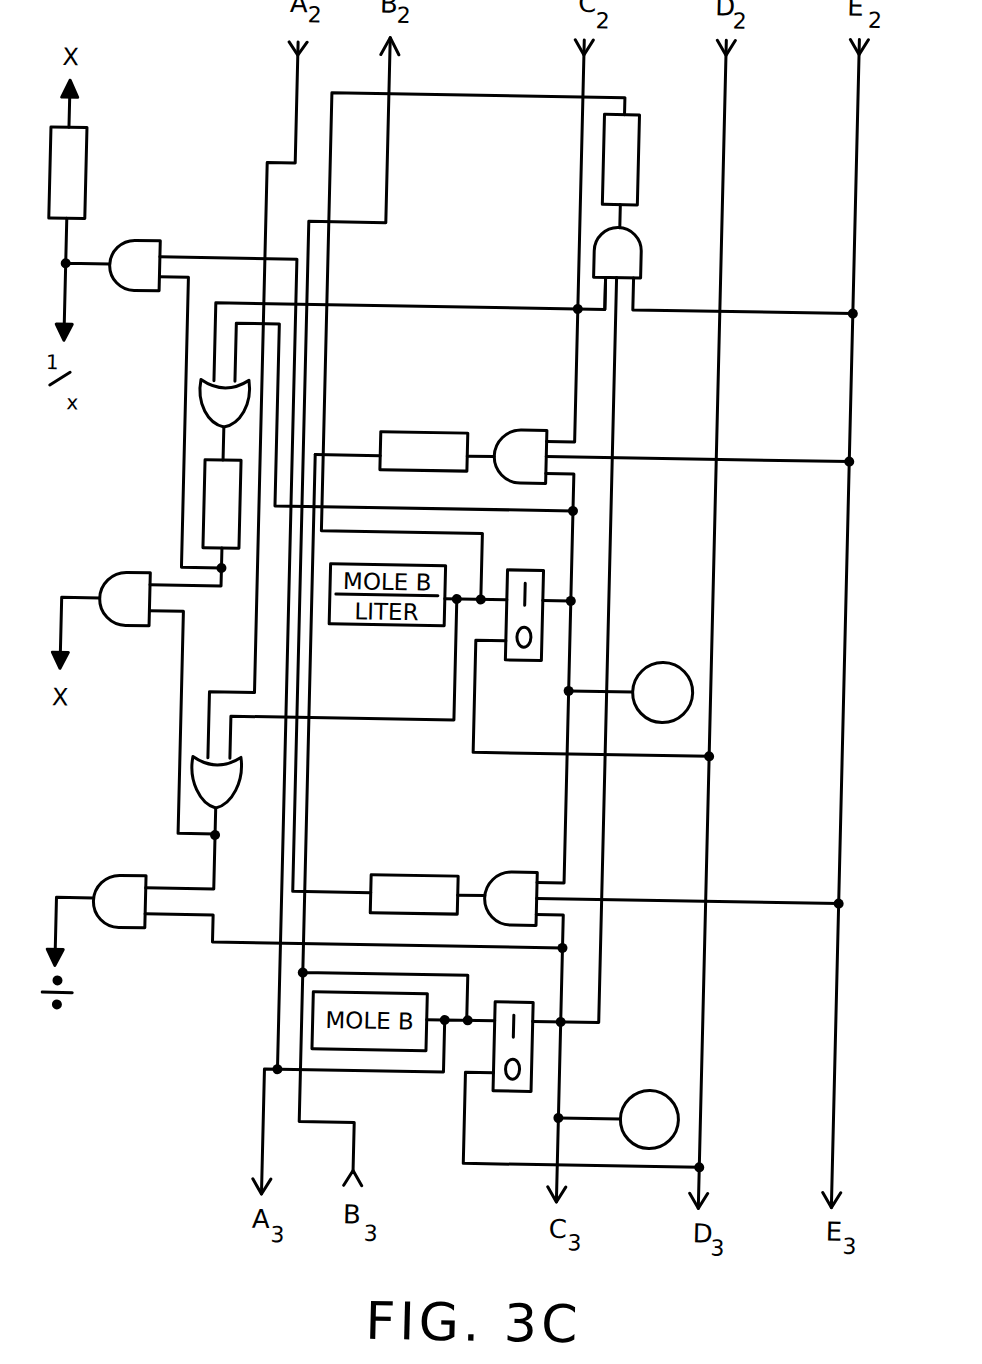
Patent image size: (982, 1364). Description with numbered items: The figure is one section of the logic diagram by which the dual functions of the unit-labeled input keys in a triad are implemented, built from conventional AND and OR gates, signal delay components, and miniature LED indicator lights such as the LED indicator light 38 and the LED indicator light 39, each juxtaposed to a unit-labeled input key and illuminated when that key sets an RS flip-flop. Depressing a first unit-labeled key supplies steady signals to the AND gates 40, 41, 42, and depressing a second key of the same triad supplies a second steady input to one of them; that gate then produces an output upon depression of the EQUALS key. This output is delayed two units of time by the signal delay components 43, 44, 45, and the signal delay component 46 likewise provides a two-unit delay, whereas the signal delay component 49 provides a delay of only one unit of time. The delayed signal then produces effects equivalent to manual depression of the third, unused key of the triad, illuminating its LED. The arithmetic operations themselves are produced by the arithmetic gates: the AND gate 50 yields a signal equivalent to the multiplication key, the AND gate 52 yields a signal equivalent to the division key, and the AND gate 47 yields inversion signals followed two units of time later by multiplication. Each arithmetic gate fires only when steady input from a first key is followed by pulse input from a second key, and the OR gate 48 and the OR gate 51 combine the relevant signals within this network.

The LED indicator light 38 is at (662, 692).
The LED indicator light 39 is at (649, 1119).
The AND gate 40 is at (618, 252).
The AND gate 41 is at (520, 457).
The AND gate 42 is at (510, 899).
The signal delay component 43 is at (620, 159).
The signal delay component 44 is at (424, 451).
The signal delay component 45 is at (414, 894).
The signal delay component 46 is at (68, 173).
The AND gate 47 is at (134, 265).
The OR gate 48 is at (224, 404).
The signal delay component 49 is at (222, 504).
The AND gate 50 is at (124, 599).
The OR gate 51 is at (216, 783).
The AND gate 52 is at (119, 901).